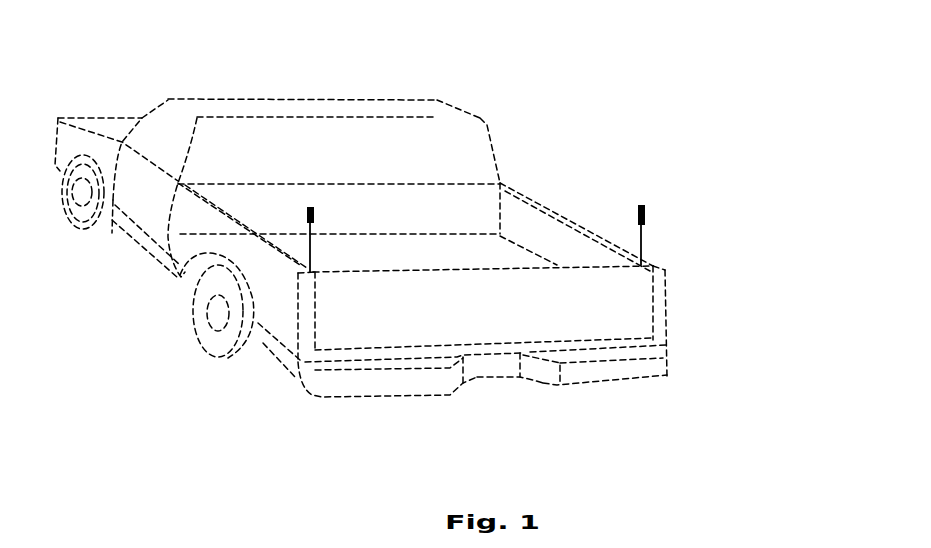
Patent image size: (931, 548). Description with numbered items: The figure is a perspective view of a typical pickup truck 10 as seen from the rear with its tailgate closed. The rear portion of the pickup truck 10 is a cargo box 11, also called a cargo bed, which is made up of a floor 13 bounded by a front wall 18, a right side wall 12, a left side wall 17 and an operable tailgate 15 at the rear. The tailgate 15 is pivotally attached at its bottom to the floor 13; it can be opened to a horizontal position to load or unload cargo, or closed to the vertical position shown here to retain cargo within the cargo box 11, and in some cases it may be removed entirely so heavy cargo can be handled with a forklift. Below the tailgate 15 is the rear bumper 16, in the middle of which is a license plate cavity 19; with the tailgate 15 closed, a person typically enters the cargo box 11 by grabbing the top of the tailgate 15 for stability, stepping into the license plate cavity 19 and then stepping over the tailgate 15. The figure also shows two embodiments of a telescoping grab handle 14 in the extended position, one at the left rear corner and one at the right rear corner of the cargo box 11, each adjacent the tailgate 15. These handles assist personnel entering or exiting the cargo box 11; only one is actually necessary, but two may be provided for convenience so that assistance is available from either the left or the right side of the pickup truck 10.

The pickup truck 10 is at (294, 94).
The cargo box 11 is at (417, 258).
The right side wall 12 is at (577, 217).
The floor 13 is at (488, 250).
The telescoping grab handle 14 is at (304, 249).
The tailgate 15 is at (600, 292).
The rear bumper 16 is at (371, 397).
The left side wall 17 is at (280, 287).
The front wall 18 is at (383, 207).
The license plate cavity 19 is at (497, 382).